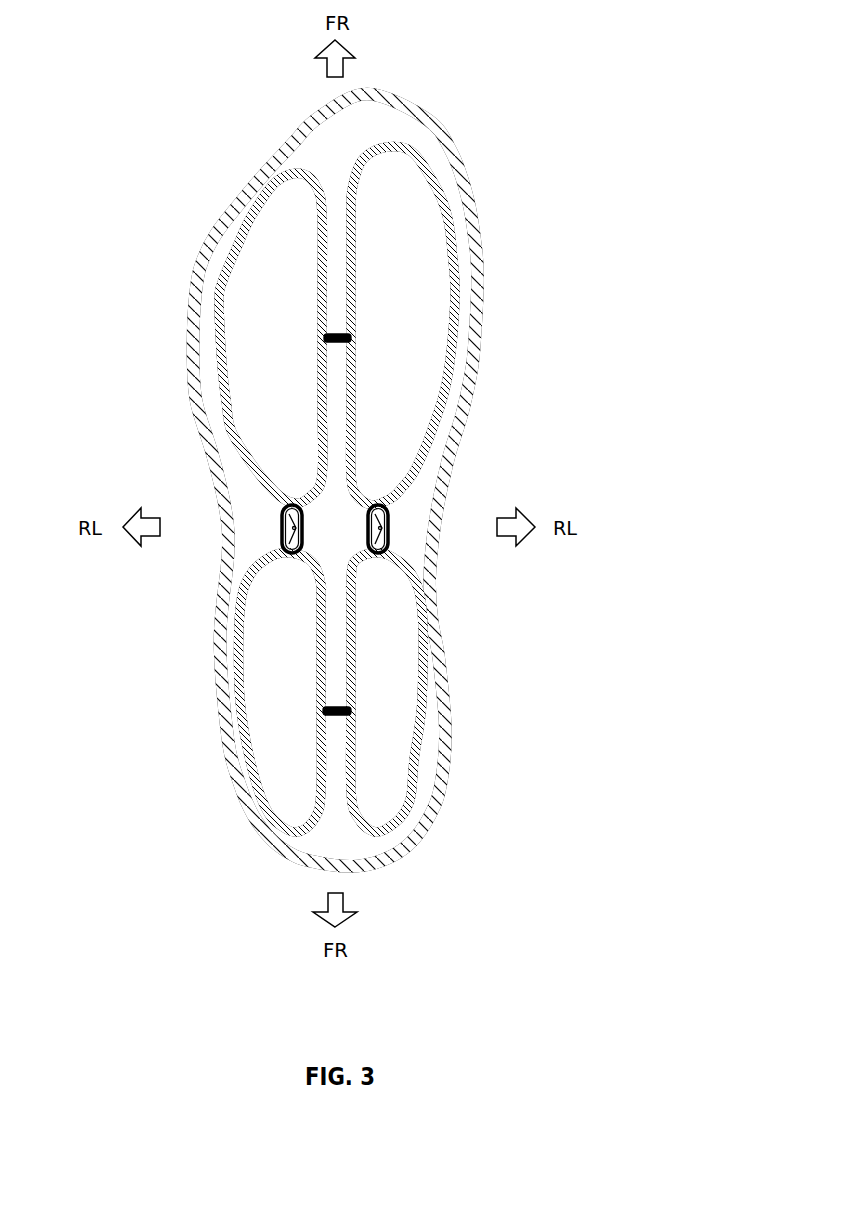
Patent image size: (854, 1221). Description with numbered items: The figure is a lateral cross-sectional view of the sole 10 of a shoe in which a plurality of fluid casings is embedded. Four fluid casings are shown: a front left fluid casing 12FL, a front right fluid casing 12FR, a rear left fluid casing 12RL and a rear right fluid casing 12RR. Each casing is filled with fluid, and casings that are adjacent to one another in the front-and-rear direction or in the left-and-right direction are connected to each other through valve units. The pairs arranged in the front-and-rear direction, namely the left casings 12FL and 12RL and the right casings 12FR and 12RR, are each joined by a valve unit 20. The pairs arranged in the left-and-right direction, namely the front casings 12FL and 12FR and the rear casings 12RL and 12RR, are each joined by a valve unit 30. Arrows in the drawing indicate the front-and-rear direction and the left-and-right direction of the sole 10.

The sole 10 is at (509, 189).
The front left fluid casing 12FL is at (213, 353).
The front right fluid casing 12FR is at (461, 317).
The rear left fluid casing 12RL is at (226, 664).
The rear right fluid casing 12RR is at (438, 684).
The valve unit 20 is at (403, 519).
The valve unit 30 is at (327, 325).